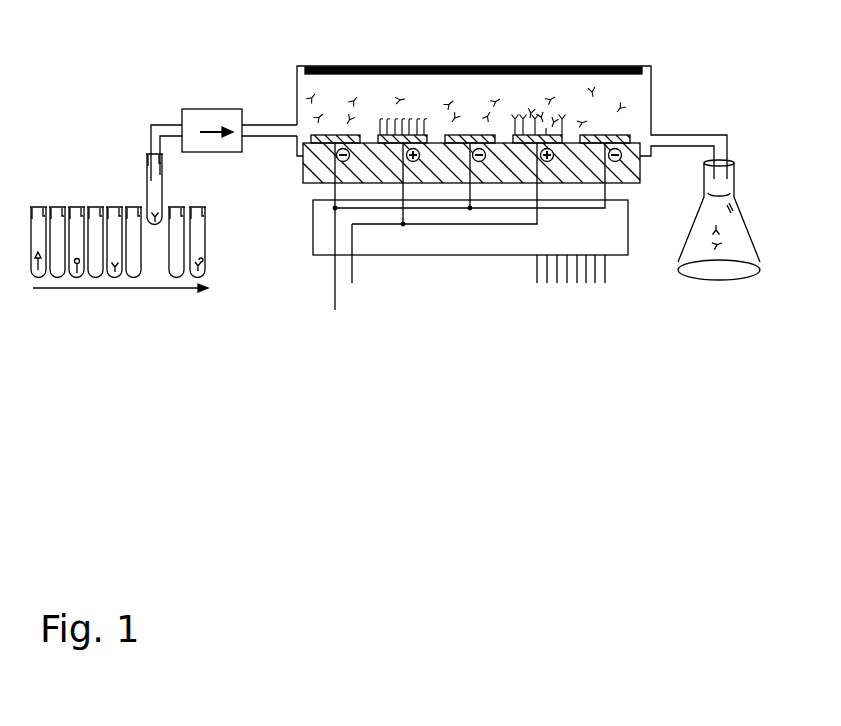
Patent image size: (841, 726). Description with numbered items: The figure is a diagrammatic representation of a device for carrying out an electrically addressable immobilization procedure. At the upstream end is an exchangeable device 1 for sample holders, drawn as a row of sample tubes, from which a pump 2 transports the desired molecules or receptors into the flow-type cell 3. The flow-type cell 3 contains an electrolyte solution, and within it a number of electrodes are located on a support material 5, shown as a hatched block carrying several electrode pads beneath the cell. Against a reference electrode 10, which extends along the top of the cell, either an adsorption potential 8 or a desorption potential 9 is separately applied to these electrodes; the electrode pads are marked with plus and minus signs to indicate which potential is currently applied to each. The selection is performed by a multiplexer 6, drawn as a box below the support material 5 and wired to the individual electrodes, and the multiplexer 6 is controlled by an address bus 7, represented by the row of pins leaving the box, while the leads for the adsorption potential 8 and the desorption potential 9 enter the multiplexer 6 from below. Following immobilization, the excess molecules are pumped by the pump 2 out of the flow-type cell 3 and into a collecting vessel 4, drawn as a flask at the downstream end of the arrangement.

The exchangeable device for sample holders 1 is at (119, 237).
The pump 2 is at (224, 127).
The flow-type cell 3 is at (644, 92).
The collecting vessel 4 is at (719, 239).
The support material 5 is at (473, 162).
The multiplexer 6 is at (470, 219).
The address bus 7 is at (571, 284).
The adsorption potential 8 is at (362, 259).
The desorption potential 9 is at (324, 262).
The reference electrode 10 is at (470, 66).